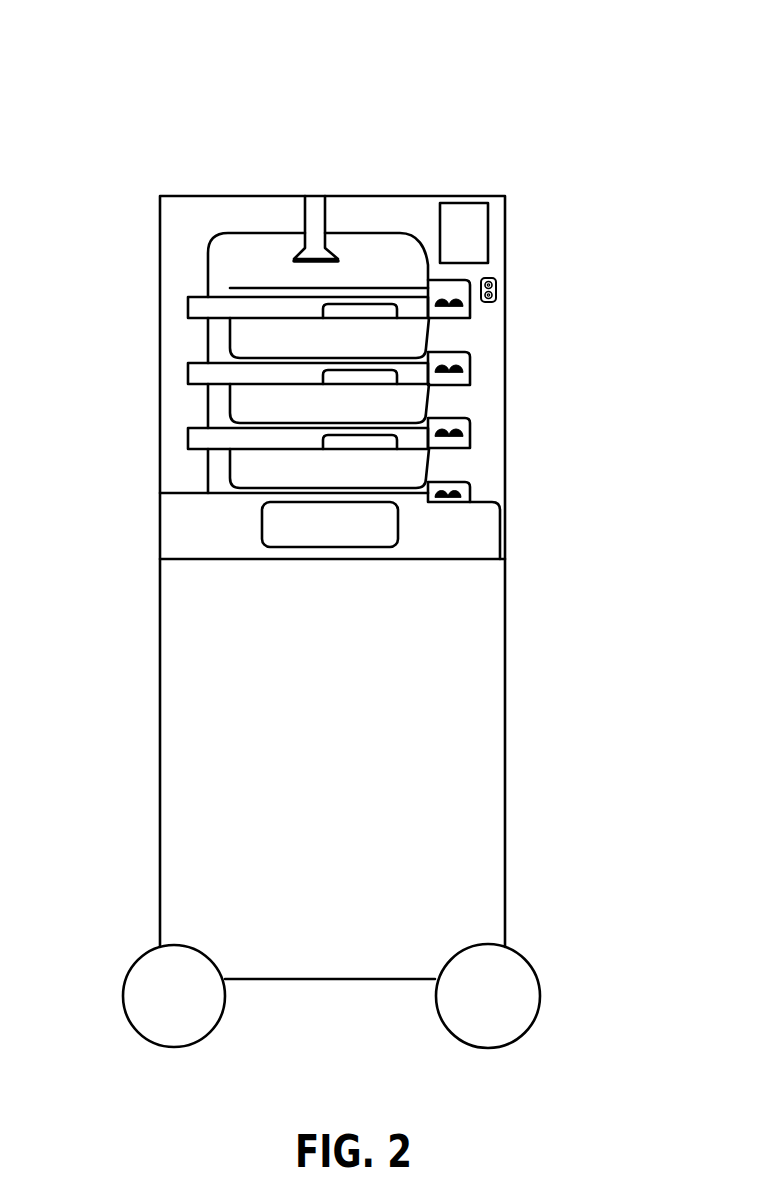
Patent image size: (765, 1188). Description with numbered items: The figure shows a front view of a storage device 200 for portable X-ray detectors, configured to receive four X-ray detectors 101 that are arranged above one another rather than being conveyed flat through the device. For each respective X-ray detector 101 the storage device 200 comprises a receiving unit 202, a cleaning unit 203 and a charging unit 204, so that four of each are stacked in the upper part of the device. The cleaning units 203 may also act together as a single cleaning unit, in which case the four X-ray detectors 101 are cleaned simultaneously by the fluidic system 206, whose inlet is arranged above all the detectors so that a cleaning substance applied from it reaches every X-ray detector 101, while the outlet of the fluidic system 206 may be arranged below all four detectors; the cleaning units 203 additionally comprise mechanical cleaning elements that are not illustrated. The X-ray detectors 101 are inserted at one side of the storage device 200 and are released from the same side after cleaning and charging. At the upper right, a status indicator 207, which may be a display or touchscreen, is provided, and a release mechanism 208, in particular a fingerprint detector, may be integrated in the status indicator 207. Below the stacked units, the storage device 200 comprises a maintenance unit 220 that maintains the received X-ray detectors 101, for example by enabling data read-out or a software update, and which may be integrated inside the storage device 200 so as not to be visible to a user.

The storage device 200 is at (577, 88).
The X-ray detector 101 is at (455, 312).
The receiving unit 202 is at (188, 305).
The cleaning unit 203 is at (360, 258).
The charging unit 204 is at (471, 279).
The fluidic system 206 is at (313, 213).
The status indicator 207 is at (474, 198).
The release mechanism 208 is at (472, 242).
The maintenance unit 220 is at (472, 702).